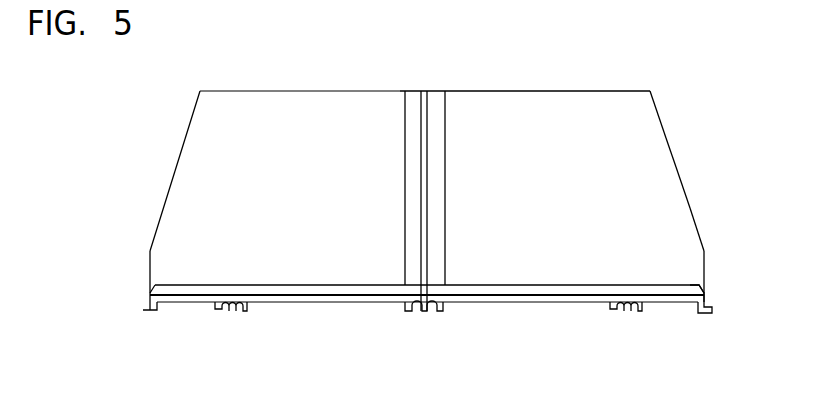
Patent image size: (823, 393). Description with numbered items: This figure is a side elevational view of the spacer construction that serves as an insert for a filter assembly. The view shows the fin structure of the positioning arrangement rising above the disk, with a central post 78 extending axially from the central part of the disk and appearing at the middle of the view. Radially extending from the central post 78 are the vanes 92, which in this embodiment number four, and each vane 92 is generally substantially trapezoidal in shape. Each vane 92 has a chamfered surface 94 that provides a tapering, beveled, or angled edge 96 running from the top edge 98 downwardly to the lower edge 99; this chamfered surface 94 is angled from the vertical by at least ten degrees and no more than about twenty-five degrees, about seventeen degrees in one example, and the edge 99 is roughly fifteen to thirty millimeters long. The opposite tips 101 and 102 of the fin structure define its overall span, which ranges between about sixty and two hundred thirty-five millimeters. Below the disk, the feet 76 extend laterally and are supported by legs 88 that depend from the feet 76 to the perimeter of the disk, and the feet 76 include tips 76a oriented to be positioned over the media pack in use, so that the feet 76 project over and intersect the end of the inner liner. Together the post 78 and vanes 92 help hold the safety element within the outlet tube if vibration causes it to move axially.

The feet 76 is at (427, 313).
The tips 76a is at (145, 310).
The central post 78 is at (445, 152).
The legs 88 is at (708, 305).
The vanes 92 is at (178, 182).
The chamfered surface 94 is at (188, 128).
The angled edge 96 is at (690, 212).
The top edge 98 is at (538, 91).
The edge 99 is at (703, 252).
The tip 101 is at (654, 92).
The tip 102 is at (200, 91).